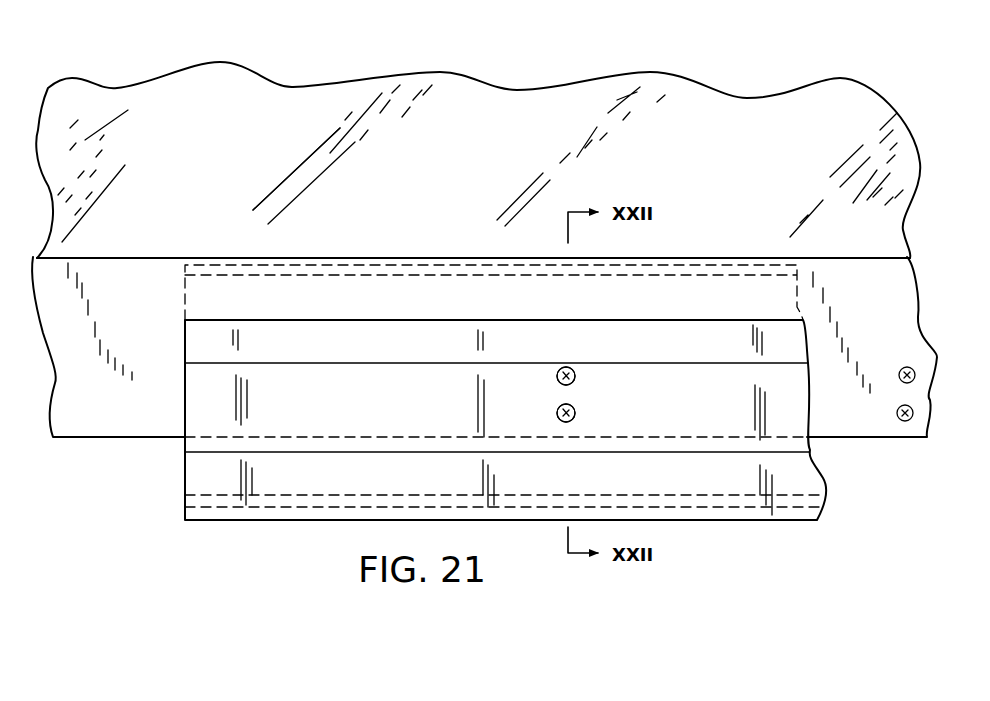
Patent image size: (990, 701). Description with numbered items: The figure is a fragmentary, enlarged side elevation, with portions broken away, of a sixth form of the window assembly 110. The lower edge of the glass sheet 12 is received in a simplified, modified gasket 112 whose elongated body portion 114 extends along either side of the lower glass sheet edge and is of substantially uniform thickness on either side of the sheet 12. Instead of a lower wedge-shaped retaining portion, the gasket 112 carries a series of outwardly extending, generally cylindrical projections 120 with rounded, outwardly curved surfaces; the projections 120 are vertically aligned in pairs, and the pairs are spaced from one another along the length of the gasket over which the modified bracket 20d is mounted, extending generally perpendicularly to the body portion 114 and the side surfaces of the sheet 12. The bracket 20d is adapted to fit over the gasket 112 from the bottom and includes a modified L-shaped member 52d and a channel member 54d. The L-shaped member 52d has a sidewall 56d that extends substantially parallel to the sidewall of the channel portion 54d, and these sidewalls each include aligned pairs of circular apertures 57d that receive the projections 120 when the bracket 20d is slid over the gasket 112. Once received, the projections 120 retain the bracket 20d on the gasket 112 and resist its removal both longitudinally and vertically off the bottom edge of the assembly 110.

The glass sheet 12 is at (275, 107).
The window assembly 110 is at (777, 78).
The gasket 112 is at (885, 278).
The body portion 114 is at (128, 424).
The projections 120 is at (573, 408).
The bracket 20d is at (183, 475).
The L-shaped member 52d is at (232, 478).
The channel member 54d is at (185, 290).
The sidewall 56d is at (392, 407).
The circular apertures 57d is at (560, 408).